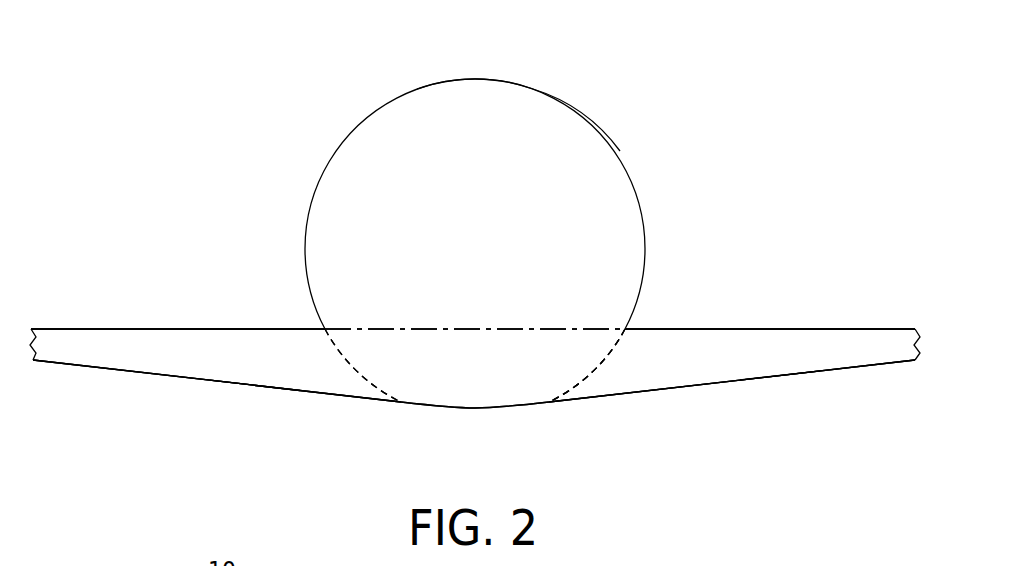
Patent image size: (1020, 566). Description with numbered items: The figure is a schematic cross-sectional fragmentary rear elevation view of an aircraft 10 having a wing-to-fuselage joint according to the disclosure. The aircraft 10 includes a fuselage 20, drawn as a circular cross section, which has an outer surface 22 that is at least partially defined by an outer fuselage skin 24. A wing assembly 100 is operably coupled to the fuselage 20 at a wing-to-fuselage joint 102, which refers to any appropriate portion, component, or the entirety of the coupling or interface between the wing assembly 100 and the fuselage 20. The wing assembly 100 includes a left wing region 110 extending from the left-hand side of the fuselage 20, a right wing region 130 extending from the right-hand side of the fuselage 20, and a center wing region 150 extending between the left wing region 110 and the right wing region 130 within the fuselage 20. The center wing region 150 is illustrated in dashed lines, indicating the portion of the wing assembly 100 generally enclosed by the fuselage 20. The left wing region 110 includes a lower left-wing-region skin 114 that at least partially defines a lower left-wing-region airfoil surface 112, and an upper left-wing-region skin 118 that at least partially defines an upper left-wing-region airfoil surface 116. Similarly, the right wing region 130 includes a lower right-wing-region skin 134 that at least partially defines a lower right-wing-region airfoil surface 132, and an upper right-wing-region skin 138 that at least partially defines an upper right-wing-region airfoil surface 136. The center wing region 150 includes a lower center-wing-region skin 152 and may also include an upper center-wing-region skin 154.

The aircraft 10 is at (245, 60).
The fuselage 20 is at (390, 92).
The outer surface 22 is at (523, 85).
The outer fuselage skin 24 is at (581, 114).
The wing assembly 100 is at (798, 200).
The wing-to-fuselage joint 102 is at (303, 314).
The left wing region 110 is at (100, 310).
The lower left-wing-region airfoil surface 112 is at (169, 376).
The lower left-wing-region skin 114 is at (254, 386).
The upper left-wing-region airfoil surface 116 is at (158, 327).
The upper left-wing-region skin 118 is at (218, 328).
The right wing region 130 is at (707, 305).
The lower right-wing-region airfoil surface 132 is at (679, 388).
The lower right-wing-region skin 134 is at (778, 376).
The upper right-wing-region airfoil surface 136 is at (780, 328).
The upper right-wing-region skin 138 is at (840, 328).
The center wing region 150 is at (430, 328).
The lower center-wing-region skin 152 is at (474, 409).
The upper center-wing-region skin 154 is at (507, 328).